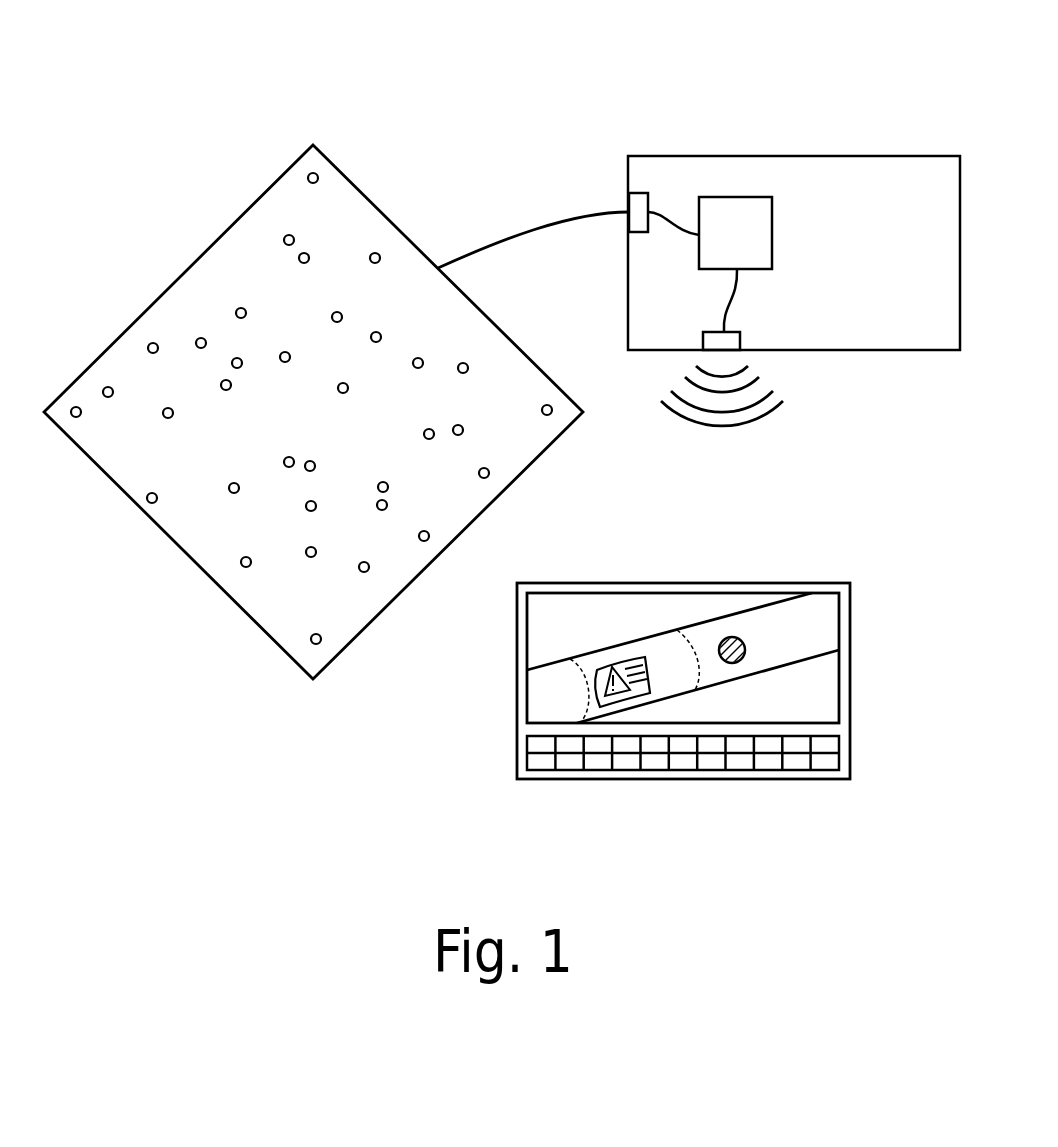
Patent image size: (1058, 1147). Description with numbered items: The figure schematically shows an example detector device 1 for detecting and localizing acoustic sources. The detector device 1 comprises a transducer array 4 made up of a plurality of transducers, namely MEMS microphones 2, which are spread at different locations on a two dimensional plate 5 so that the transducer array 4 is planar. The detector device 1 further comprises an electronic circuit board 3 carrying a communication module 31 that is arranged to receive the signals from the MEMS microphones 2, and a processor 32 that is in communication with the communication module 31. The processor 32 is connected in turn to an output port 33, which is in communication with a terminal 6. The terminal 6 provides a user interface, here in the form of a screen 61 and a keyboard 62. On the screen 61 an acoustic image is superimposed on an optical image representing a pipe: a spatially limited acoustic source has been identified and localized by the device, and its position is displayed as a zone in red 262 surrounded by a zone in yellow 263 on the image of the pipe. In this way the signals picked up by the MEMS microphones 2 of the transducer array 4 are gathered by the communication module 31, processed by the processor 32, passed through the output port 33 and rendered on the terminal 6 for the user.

The detector device 1 is at (500, 114).
The MEMS microphones 2 is at (102, 392).
The electronic circuit board 3 is at (673, 155).
The communication module 31 is at (629, 200).
The processor 32 is at (710, 264).
The output port 33 is at (741, 341).
The transducer array 4 is at (161, 252).
The two dimensional plate 5 is at (390, 218).
The terminal 6 is at (851, 677).
The screen 61 is at (818, 695).
The keyboard 62 is at (793, 769).
The zone in red 262 is at (738, 645).
The zone in yellow 263 is at (743, 643).